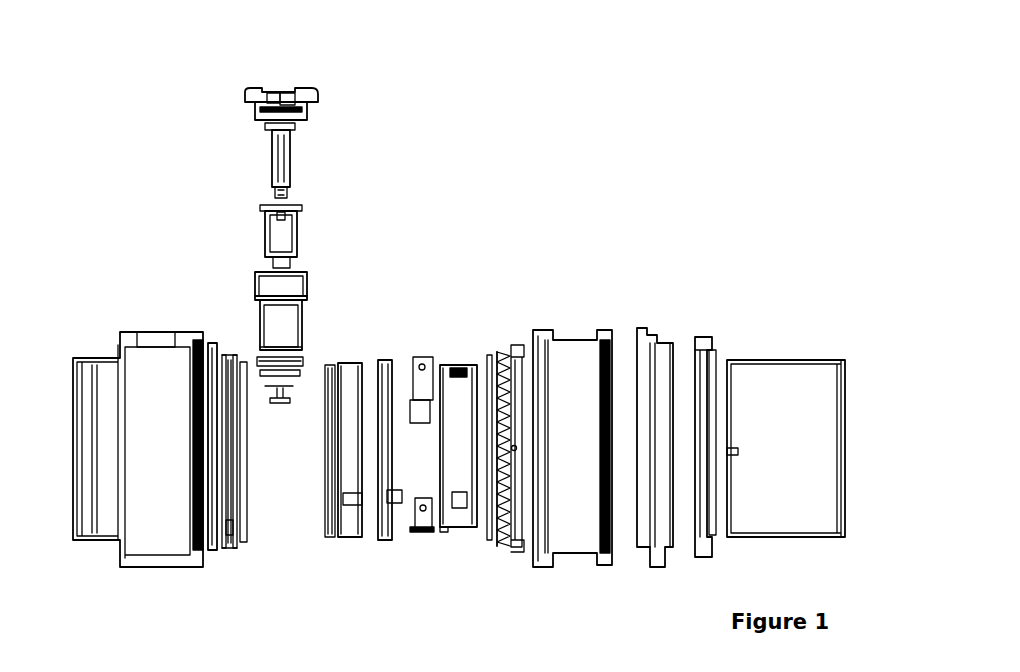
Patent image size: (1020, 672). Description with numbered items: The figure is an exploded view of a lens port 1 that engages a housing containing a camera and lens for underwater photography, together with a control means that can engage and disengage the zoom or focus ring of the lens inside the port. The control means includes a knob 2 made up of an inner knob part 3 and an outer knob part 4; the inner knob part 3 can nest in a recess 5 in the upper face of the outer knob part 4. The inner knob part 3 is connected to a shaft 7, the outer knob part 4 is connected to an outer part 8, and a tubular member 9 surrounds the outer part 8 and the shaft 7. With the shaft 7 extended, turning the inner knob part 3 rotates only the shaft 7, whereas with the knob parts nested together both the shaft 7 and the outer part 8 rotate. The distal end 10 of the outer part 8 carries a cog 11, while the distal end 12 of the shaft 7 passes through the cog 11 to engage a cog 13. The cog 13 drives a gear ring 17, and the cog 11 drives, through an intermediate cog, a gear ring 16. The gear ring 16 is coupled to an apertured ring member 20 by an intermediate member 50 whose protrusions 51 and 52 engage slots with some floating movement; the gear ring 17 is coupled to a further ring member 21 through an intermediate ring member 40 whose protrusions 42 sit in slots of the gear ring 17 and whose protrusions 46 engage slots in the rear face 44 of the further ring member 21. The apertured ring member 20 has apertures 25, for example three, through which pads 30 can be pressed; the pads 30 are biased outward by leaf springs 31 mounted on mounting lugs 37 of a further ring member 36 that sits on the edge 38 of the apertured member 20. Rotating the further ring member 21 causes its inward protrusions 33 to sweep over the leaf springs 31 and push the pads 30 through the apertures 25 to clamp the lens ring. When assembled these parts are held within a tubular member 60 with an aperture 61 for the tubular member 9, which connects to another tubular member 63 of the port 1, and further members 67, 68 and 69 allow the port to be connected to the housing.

The lens port 1 is at (480, 281).
The knob 2 is at (336, 208).
The inner knob part 3 is at (270, 99).
The outer knob part 4 is at (316, 92).
The recess 5 is at (262, 102).
The shaft 7 is at (291, 157).
The outer part 8 is at (300, 233).
The tubular member 9 is at (258, 332).
The distal end 10 is at (300, 272).
The cog 11 is at (305, 352).
The distal end 12 is at (290, 192).
The cog 13 is at (303, 368).
The gear ring 16 is at (519, 346).
The gear ring 17 is at (217, 547).
The apertured ring member 20 is at (453, 527).
The further ring member 21 is at (343, 537).
The apertures 25 is at (463, 368).
The pads 30 is at (423, 497).
The leaf springs 31 is at (422, 364).
The protrusions 33 is at (365, 505).
The further ring member 36 is at (390, 360).
The mounting lug 37 is at (398, 490).
The edge 38 is at (440, 413).
The intermediate ring member 40 is at (238, 482).
The protrusions 42 is at (247, 447).
The rear face 44 is at (320, 522).
The protrusions 46 is at (237, 375).
The intermediate member 50 is at (503, 403).
The protrusions 51 is at (507, 457).
The protrusions 52 is at (492, 345).
The tubular member 60 is at (153, 567).
The aperture 61 is at (155, 340).
The tubular member 63 is at (612, 335).
The member 67 is at (664, 333).
The member 68 is at (713, 350).
The member 69 is at (783, 360).